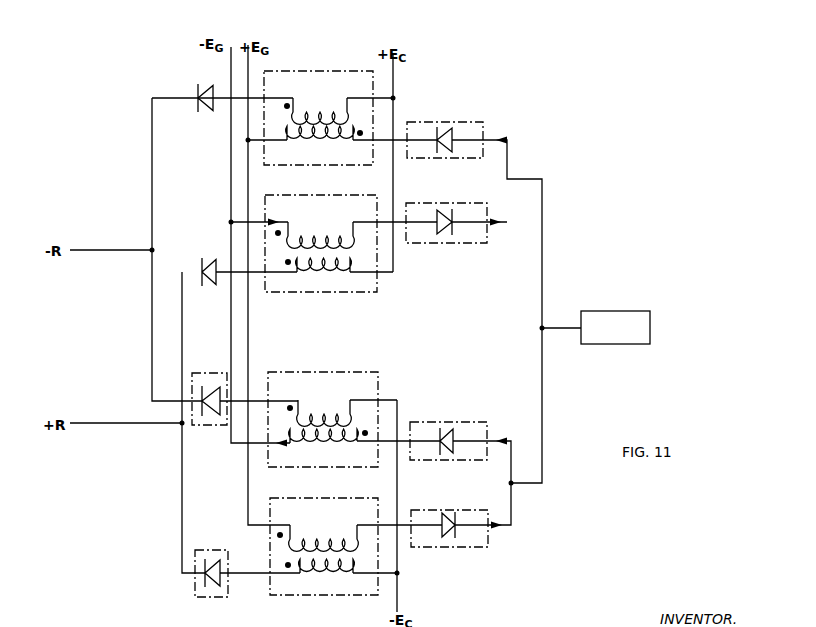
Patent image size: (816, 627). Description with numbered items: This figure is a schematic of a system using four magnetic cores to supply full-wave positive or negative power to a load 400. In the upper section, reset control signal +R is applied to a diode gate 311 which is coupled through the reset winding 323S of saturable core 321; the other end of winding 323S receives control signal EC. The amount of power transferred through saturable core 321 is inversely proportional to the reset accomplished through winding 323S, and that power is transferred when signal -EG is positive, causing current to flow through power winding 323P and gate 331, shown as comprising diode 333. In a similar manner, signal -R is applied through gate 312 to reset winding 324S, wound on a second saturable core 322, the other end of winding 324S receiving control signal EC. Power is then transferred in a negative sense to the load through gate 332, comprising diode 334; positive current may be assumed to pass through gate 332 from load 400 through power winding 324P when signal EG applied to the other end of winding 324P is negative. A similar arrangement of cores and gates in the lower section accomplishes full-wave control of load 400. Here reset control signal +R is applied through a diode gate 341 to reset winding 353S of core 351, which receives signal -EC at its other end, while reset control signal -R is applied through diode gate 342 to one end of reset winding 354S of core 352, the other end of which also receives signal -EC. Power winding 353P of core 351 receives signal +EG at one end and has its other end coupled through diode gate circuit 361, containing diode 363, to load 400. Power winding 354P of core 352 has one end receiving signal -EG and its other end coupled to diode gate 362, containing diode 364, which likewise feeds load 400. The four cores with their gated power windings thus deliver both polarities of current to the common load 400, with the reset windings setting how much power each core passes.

The diode gate 311 is at (209, 258).
The gate 312 is at (212, 83).
The saturable core 321 is at (292, 292).
The transformer 322 is at (282, 71).
The power winding 323P is at (321, 226).
The reset winding 323S is at (325, 274).
The power winding 324P is at (320, 143).
The reset winding 324S is at (323, 102).
The gate 331 is at (463, 243).
The gate 332 is at (483, 126).
The diode 333 is at (455, 228).
The diode 334 is at (455, 146).
The diode gate 341 is at (203, 597).
The diode gate 342 is at (208, 373).
The core 351 is at (295, 595).
The core 352 is at (283, 372).
The power winding 353P is at (325, 528).
The reset winding 353S is at (330, 576).
The power winding 354P is at (324, 448).
The reset winding 354S is at (330, 403).
The diode gate circuit 361 is at (472, 547).
The diode gate 362 is at (433, 422).
The diode 363 is at (446, 531).
The diode 364 is at (446, 446).
The load 400 is at (635, 311).